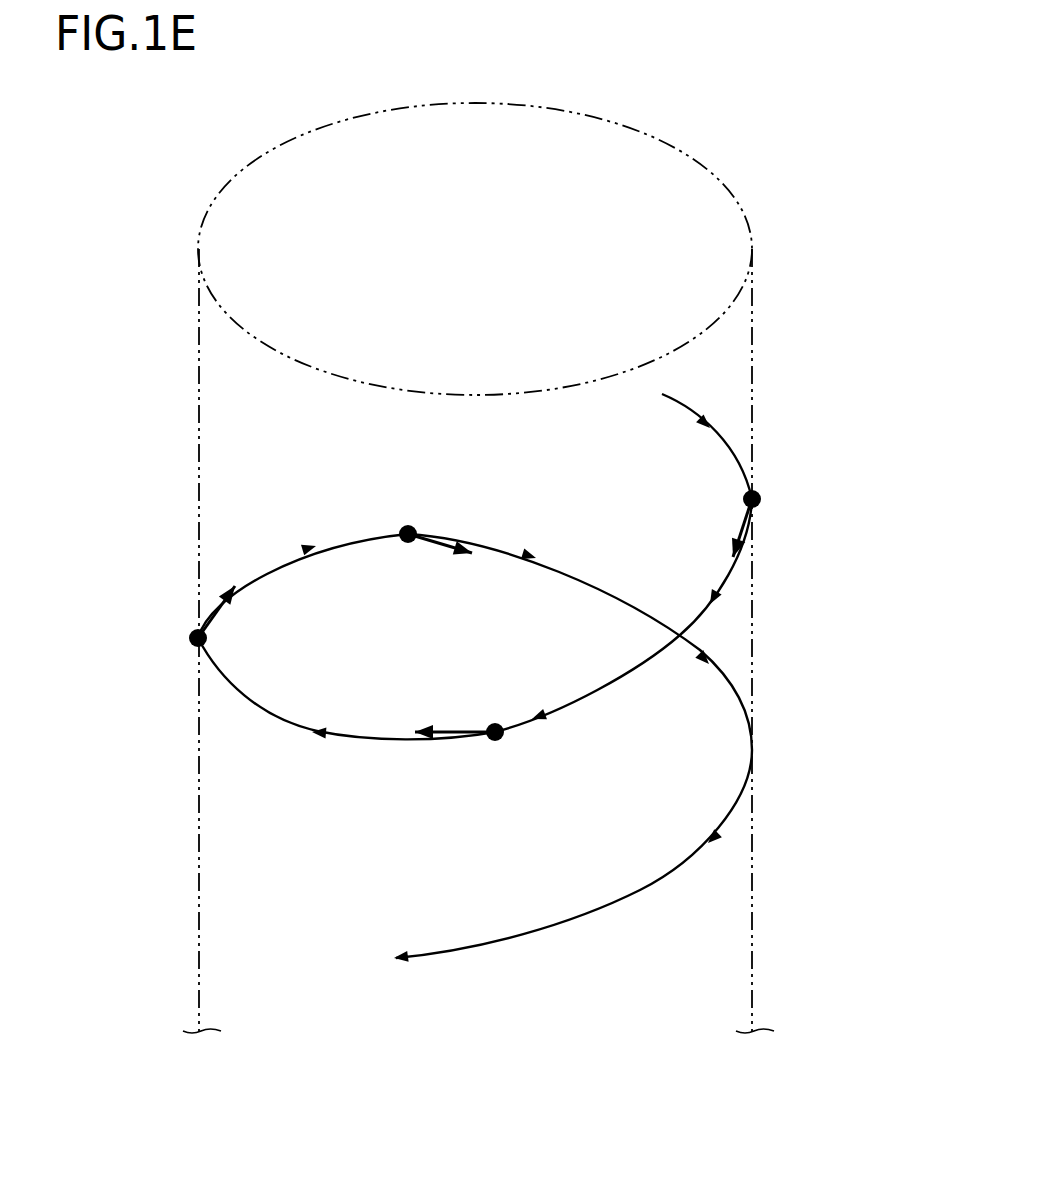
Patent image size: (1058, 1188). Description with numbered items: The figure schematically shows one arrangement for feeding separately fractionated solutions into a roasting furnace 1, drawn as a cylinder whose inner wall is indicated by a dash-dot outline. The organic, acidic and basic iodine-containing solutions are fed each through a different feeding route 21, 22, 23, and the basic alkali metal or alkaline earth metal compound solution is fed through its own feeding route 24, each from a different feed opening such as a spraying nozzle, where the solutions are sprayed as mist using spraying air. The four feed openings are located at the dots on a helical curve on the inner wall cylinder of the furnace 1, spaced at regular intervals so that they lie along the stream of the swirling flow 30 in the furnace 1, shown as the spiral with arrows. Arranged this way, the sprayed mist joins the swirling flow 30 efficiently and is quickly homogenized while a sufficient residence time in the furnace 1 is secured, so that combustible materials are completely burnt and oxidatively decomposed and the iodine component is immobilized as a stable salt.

The roasting furnace 1 is at (752, 863).
The swirling flow 30 is at (668, 877).
The feeding route for iodine-containing solution 21 is at (798, 498).
The feeding route for iodine-containing solution 22 is at (553, 736).
The feeding route for iodine-containing solution 23 is at (148, 635).
The feeding route for alkali metal compound solution 24 is at (312, 533).